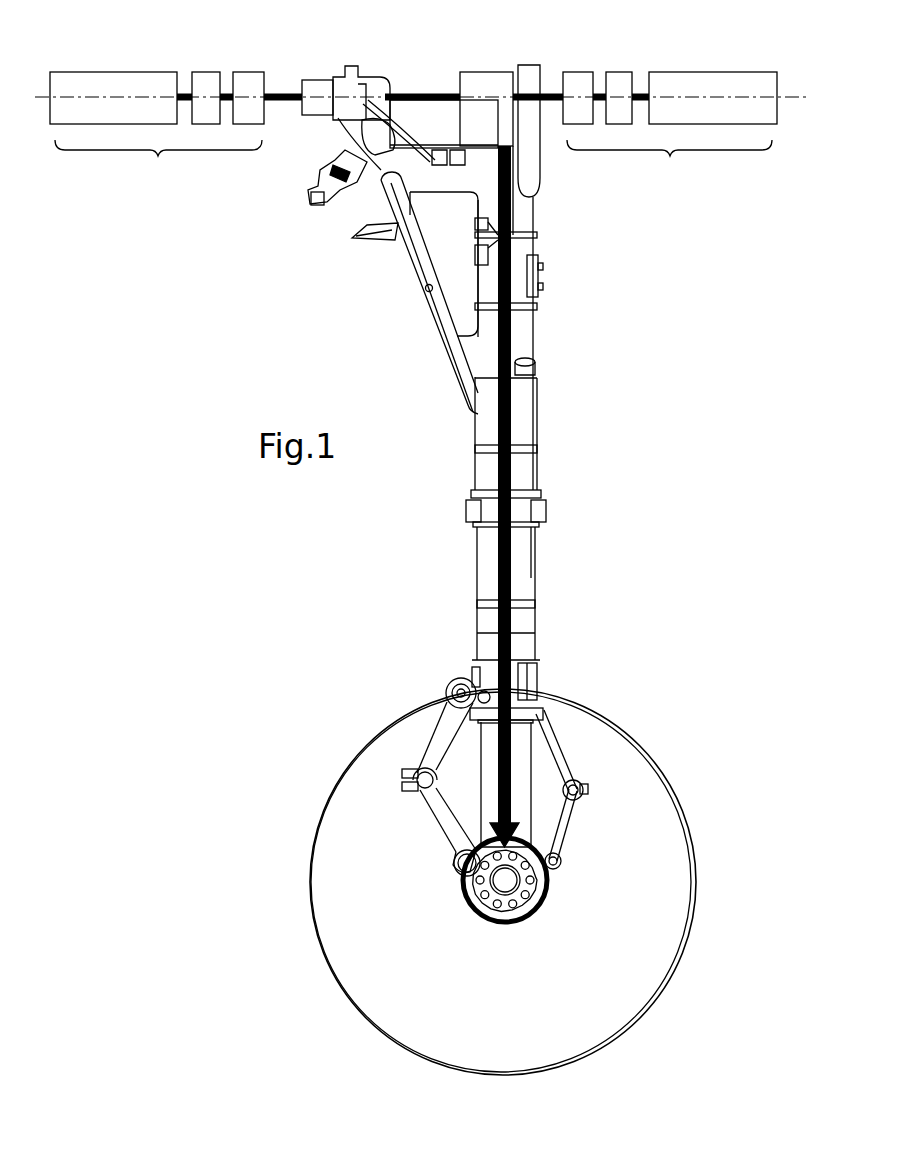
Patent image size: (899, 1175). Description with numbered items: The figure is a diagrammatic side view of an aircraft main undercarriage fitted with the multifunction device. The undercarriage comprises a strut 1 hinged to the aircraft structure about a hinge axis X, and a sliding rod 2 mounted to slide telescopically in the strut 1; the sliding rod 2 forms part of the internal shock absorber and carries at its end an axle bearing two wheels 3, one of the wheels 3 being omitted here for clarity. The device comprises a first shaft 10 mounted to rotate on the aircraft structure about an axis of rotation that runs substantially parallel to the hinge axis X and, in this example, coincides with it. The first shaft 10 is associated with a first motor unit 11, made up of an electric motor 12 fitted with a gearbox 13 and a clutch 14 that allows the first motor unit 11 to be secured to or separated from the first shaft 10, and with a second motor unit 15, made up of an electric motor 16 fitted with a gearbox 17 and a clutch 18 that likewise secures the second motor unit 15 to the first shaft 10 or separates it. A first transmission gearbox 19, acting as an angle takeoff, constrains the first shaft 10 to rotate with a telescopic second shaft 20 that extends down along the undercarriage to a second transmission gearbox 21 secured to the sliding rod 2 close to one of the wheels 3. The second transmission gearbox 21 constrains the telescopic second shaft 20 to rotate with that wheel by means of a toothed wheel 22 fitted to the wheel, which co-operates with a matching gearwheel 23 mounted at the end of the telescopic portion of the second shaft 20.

The strut 1 is at (528, 583).
The sliding rod 2 is at (488, 750).
The wheel 3 is at (328, 868).
The first shaft 10 is at (407, 92).
The first motor unit 11 is at (158, 162).
The electric motor 12 is at (90, 80).
The gearbox 13 is at (206, 80).
The clutch 14 is at (250, 80).
The second motor unit 15 is at (669, 162).
The electric motor 16 is at (712, 80).
The gearbox 17 is at (622, 80).
The clutch 18 is at (575, 80).
The first transmission gearbox 19 is at (477, 80).
The telescopic second shaft 20 is at (513, 246).
The second transmission gearbox 21 is at (470, 831).
The toothed wheel 22 is at (552, 880).
The gearwheel 23 is at (520, 828).
The hinge axis X is at (792, 92).